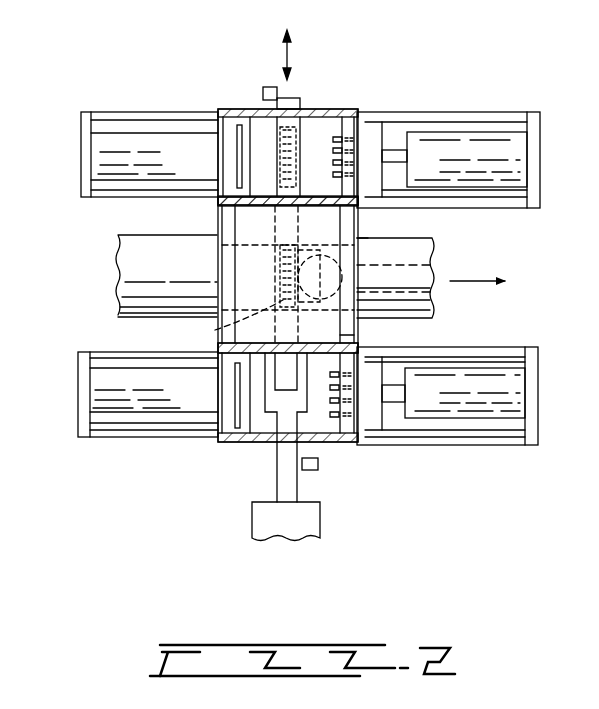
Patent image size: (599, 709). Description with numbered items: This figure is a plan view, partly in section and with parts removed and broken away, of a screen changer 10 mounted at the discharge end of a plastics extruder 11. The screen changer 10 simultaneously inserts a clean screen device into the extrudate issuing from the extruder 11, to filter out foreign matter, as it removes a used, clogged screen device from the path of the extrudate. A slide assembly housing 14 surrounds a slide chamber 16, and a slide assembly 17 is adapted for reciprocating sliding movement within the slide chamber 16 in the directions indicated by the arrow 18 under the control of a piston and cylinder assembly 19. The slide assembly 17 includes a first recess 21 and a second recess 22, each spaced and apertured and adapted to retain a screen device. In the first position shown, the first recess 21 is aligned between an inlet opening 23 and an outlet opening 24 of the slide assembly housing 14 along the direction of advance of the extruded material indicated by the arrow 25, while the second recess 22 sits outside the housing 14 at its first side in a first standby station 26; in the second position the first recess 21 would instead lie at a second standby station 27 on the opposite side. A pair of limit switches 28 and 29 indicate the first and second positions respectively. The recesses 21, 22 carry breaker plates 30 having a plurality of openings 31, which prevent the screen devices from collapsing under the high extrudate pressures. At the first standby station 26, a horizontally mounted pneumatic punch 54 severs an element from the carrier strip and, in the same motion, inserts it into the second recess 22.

The screen changer 10 is at (343, 447).
The plastics extruder 11 is at (118, 273).
The slide assembly housing 14 is at (350, 334).
The slide chamber 16 is at (357, 328).
The slide assembly 17 is at (300, 104).
The arrow 18 is at (292, 56).
The piston and cylinder assembly 19 is at (252, 515).
The first recess 21 is at (215, 330).
The second recess 22 is at (272, 120).
The inlet opening 23 is at (258, 262).
The outlet opening 24 is at (360, 239).
The arrow 25 is at (465, 281).
The first standby station 26 is at (262, 135).
The second standby station 27 is at (270, 416).
The limit switch 28 is at (312, 470).
The limit switch 29 is at (268, 87).
The breaker plate 30 is at (296, 172).
The openings 31 is at (296, 165).
The pneumatic punch 54 is at (81, 164).